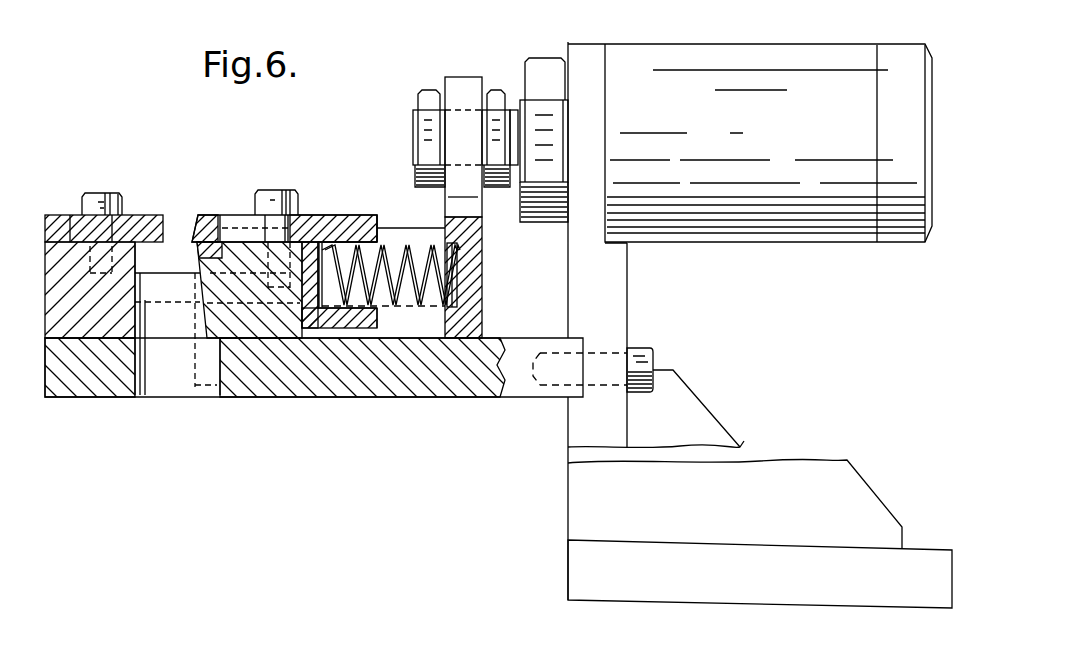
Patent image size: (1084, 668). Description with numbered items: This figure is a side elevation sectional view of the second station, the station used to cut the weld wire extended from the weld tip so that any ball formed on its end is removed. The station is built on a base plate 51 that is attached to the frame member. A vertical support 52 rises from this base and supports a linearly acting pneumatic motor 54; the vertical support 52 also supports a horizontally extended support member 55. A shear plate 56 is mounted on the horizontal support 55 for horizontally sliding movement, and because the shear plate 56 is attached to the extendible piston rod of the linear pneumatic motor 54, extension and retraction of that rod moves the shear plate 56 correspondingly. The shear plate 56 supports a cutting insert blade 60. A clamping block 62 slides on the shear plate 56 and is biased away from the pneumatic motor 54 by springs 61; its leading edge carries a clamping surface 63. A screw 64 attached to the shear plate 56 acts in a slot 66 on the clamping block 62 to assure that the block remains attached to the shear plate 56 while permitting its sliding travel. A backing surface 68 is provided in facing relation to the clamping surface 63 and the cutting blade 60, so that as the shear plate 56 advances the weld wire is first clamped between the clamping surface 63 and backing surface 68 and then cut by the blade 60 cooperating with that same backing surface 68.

The base plate 51 is at (577, 569).
The vertical support 52 is at (575, 466).
The linearly acting pneumatic motor 54 is at (722, 52).
The horizontally extended support member 55 is at (333, 383).
The shear plate 56 is at (205, 312).
The cutting insert blade 60 is at (190, 252).
The springs 61 is at (405, 242).
The clamping block 62 is at (322, 216).
The clamping surface 63 is at (203, 240).
The screw 64 is at (285, 191).
The slot 66 is at (237, 226).
The backing surface 68 is at (167, 236).